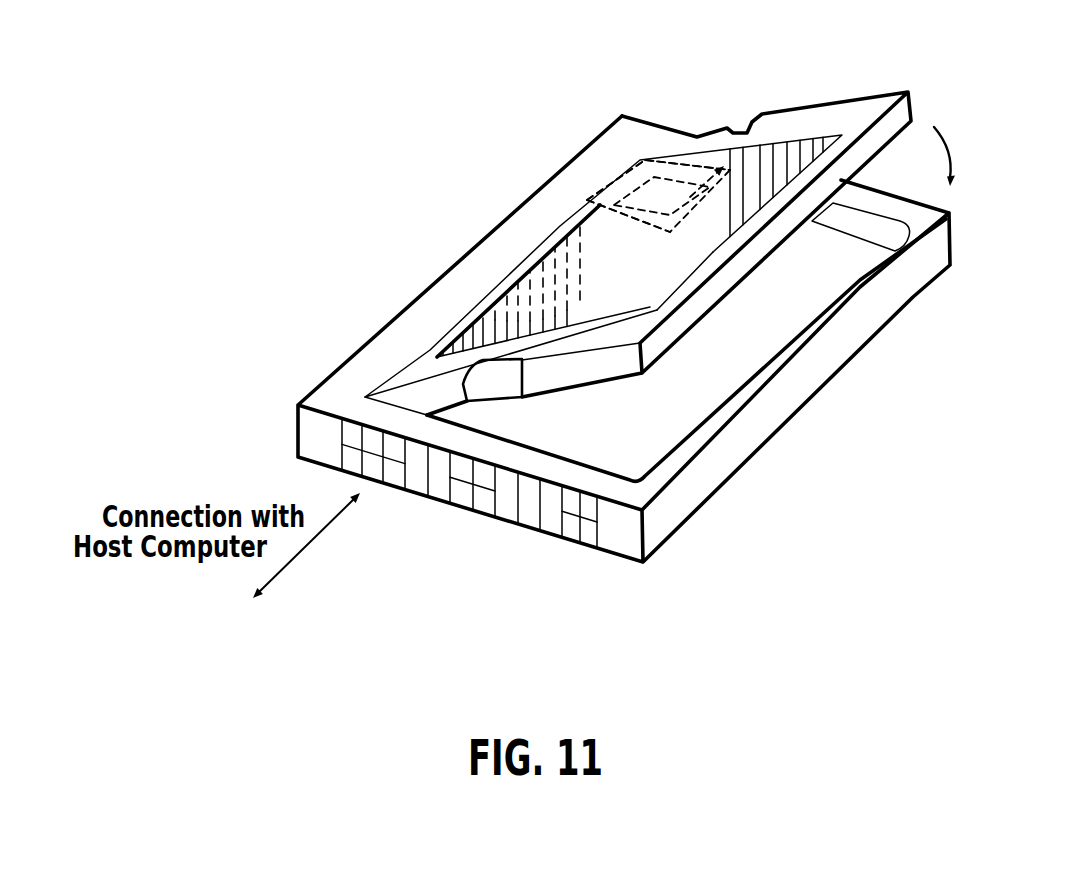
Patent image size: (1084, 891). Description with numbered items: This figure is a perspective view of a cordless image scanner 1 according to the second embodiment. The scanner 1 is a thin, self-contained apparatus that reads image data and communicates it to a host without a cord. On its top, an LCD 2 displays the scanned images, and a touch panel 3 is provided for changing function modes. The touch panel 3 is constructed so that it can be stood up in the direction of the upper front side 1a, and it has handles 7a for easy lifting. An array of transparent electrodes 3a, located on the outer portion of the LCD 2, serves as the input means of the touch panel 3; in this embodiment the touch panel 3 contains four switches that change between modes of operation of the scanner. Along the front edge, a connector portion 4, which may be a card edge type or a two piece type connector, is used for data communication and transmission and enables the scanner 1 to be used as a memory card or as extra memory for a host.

The image scanner 1 is at (265, 217).
The upper front side 1a is at (593, 162).
The LCD 2 is at (617, 293).
The touch panel 3 is at (704, 151).
The transparent electrodes 3a is at (663, 290).
The connector portion 4 is at (527, 527).
The handles 7a is at (760, 118).